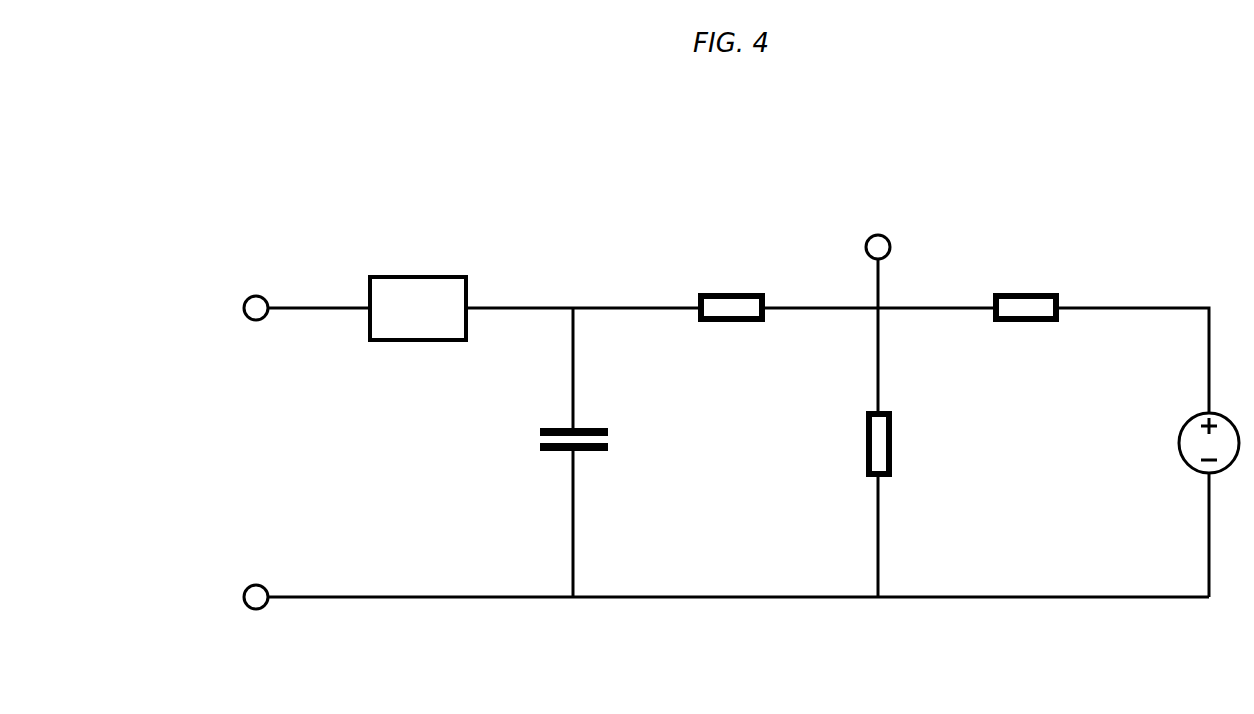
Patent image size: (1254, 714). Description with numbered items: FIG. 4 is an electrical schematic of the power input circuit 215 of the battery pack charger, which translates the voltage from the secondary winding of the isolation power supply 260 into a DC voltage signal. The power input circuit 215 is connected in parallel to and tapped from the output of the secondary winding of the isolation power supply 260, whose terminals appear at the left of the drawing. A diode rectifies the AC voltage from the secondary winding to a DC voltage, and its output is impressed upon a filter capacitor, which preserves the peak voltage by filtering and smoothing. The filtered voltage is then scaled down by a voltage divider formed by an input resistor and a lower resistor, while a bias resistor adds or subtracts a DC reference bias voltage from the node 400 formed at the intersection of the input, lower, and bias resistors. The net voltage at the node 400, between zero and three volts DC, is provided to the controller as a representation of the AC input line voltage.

The power input circuit 215 is at (340, 166).
The isolation power supply 260 is at (262, 458).
The node 400 is at (887, 239).